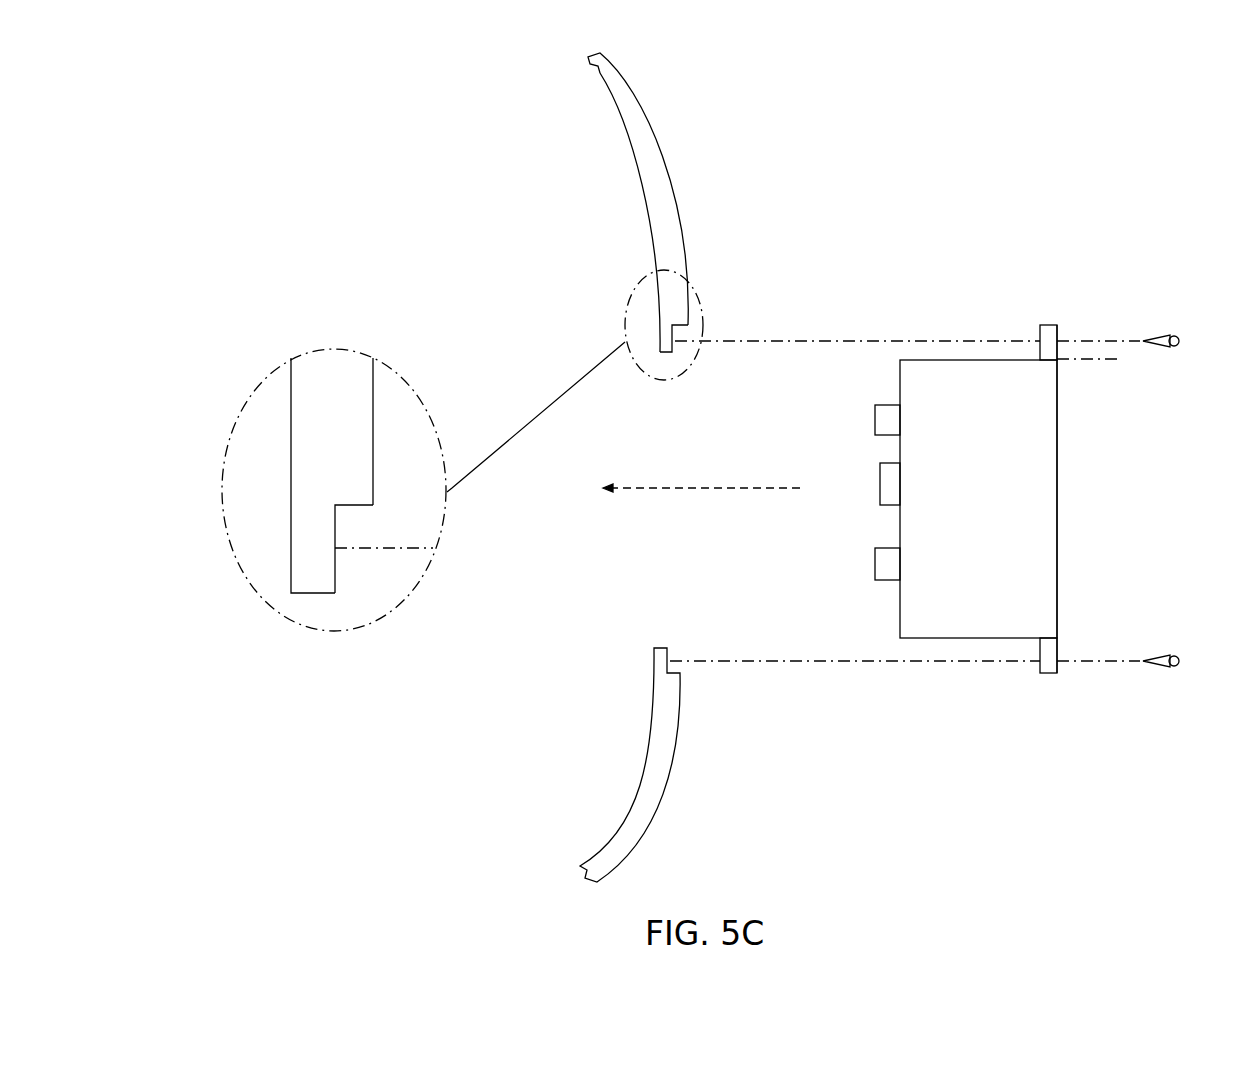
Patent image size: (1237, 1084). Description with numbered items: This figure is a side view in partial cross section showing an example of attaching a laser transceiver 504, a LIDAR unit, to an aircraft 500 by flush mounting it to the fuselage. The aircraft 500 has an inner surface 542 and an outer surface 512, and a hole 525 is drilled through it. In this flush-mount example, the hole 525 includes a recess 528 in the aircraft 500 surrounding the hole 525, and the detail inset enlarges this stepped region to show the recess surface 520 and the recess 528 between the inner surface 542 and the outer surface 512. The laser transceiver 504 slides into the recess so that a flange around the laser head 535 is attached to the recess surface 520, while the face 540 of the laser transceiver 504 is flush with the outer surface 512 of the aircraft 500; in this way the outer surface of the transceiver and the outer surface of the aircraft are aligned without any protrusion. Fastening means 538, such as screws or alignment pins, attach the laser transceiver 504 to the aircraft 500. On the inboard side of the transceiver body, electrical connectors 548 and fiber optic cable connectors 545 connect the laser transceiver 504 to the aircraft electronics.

The aircraft 500 is at (1127, 785).
The laser transceiver 504 is at (1057, 617).
The outer surface 512 is at (678, 210).
The recess surface 520 is at (336, 530).
The hole 525 is at (658, 428).
The recess 528 is at (690, 323).
The laser head 535 is at (1057, 366).
The fastening means 538 is at (1172, 335).
The face 540 is at (1058, 490).
The inner surface 542 is at (648, 210).
The fiber optic cable connectors 545 is at (875, 420).
The electrical connectors 548 is at (880, 488).